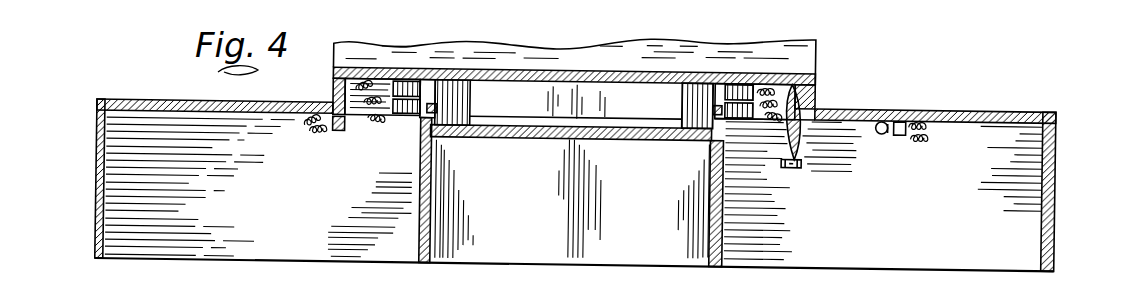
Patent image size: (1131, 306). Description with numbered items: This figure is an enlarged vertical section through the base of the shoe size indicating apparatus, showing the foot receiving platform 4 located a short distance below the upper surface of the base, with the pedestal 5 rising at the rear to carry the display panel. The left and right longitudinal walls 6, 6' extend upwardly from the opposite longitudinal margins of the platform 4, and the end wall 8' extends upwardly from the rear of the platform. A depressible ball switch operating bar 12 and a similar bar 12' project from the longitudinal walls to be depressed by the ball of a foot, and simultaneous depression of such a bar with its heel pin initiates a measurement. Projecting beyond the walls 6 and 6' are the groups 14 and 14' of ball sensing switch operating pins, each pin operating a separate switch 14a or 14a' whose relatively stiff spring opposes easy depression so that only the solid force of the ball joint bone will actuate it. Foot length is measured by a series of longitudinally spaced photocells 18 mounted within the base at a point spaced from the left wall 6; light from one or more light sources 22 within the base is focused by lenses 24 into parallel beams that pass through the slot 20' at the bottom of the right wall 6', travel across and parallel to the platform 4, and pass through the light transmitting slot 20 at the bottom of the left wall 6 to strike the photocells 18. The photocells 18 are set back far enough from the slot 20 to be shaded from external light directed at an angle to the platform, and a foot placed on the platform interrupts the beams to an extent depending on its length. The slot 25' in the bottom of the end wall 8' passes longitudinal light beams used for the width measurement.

The foot receiving platform 4 is at (585, 113).
The pedestal 5 is at (66, 100).
The left longitudinal wall 6 is at (459, 95).
The right longitudinal wall 6' is at (698, 71).
The end wall 8' is at (574, 47).
The ball switch operating bar 12 is at (463, 101).
The ball switch operating bar 12' is at (683, 99).
The group of ball sensing switch operating pins 14 is at (419, 83).
The group of ball sensing switch operating pins 14' is at (716, 82).
The switch 14a is at (388, 55).
The switch 14a' is at (753, 57).
The photocells 18 is at (340, 129).
The light transmitting slot 20 is at (445, 191).
The slot 20' is at (695, 203).
The light source 22 is at (882, 124).
The lens 24 is at (805, 140).
The slot 25' is at (571, 156).